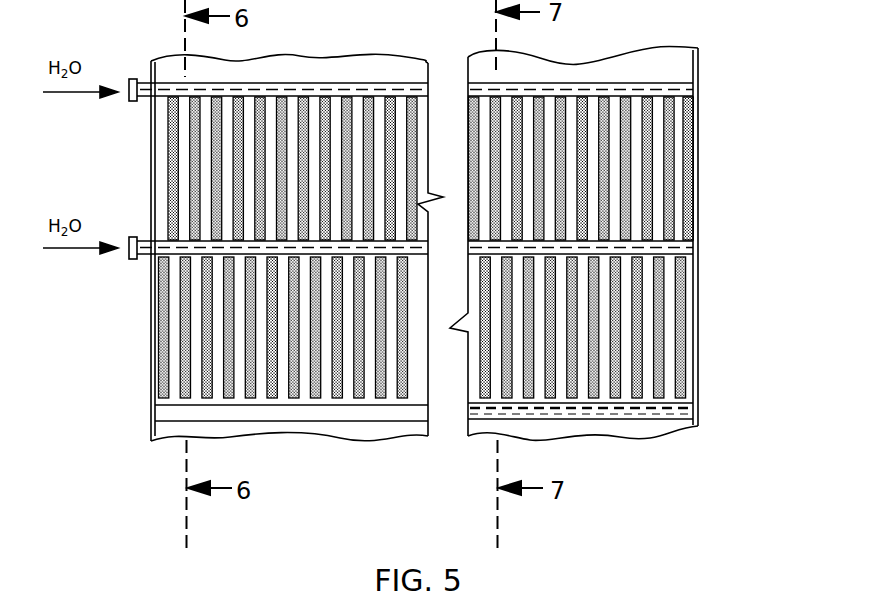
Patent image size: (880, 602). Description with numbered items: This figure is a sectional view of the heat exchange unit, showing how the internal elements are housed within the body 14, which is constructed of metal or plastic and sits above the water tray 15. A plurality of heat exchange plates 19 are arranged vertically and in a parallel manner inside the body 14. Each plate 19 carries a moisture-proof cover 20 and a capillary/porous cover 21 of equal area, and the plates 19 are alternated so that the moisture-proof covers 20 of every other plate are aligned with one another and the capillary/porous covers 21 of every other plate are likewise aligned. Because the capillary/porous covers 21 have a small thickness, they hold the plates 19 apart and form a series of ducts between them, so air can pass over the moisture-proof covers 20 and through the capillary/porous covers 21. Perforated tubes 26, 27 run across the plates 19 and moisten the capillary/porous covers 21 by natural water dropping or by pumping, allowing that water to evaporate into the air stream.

The body 14 is at (153, 312).
The water tray 15 is at (677, 412).
The heat exchange plates 19 is at (668, 148).
The moisture-proof cover 20 is at (697, 230).
The capillary/porous cover 21 is at (658, 342).
The perforated tube 26 is at (698, 83).
The perforated tube 27 is at (682, 248).